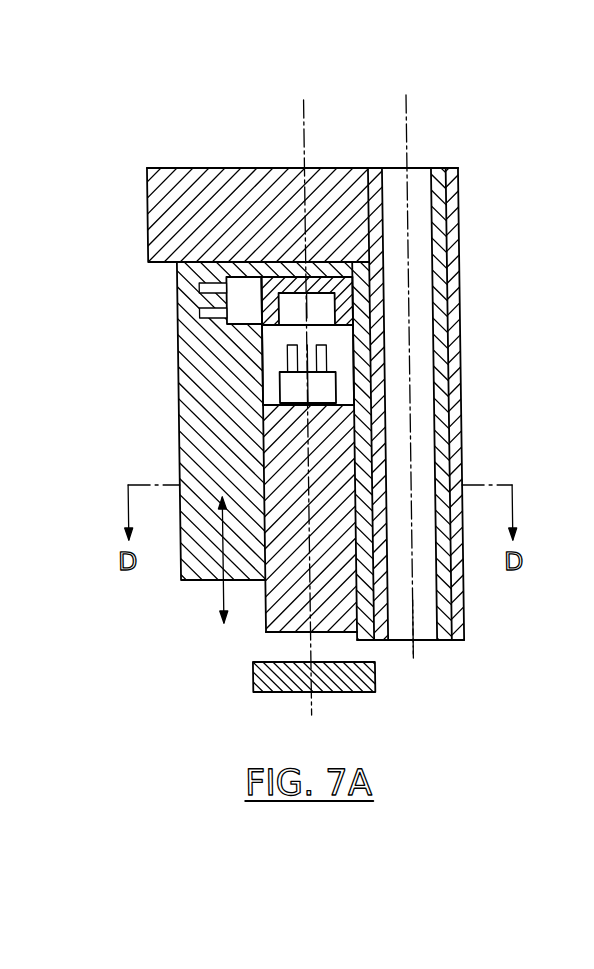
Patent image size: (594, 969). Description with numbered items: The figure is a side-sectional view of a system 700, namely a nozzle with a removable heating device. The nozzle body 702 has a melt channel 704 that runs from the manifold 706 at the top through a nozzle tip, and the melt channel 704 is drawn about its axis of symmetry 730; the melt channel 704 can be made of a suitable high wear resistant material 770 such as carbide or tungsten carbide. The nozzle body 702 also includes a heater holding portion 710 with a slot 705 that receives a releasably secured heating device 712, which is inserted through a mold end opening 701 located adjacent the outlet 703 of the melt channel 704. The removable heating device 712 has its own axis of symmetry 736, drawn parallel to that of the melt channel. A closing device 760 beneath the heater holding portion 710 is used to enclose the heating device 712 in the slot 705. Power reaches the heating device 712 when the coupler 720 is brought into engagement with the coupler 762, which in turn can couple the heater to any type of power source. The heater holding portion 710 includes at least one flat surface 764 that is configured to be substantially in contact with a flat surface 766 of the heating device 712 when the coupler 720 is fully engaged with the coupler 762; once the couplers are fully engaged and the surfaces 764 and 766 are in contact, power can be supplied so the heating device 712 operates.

The system 700 is at (438, 138).
The mold end opening 701 is at (252, 592).
The nozzle body 702 is at (447, 638).
The outlet 703 is at (422, 665).
The melt channel 704 is at (428, 578).
The slot 705 is at (274, 357).
The manifold 706 is at (172, 240).
The heater holding portion 710 is at (268, 397).
The heating device 712 is at (285, 614).
The coupler 720 is at (270, 424).
The axis of symmetry 730 is at (410, 130).
The axis of symmetry 736 is at (308, 140).
The closing device 760 is at (250, 673).
The coupler 762 is at (325, 300).
The flat surface 764 is at (338, 338).
The flat surface 766 is at (278, 371).
The high wear resistant materials 770 is at (444, 640).